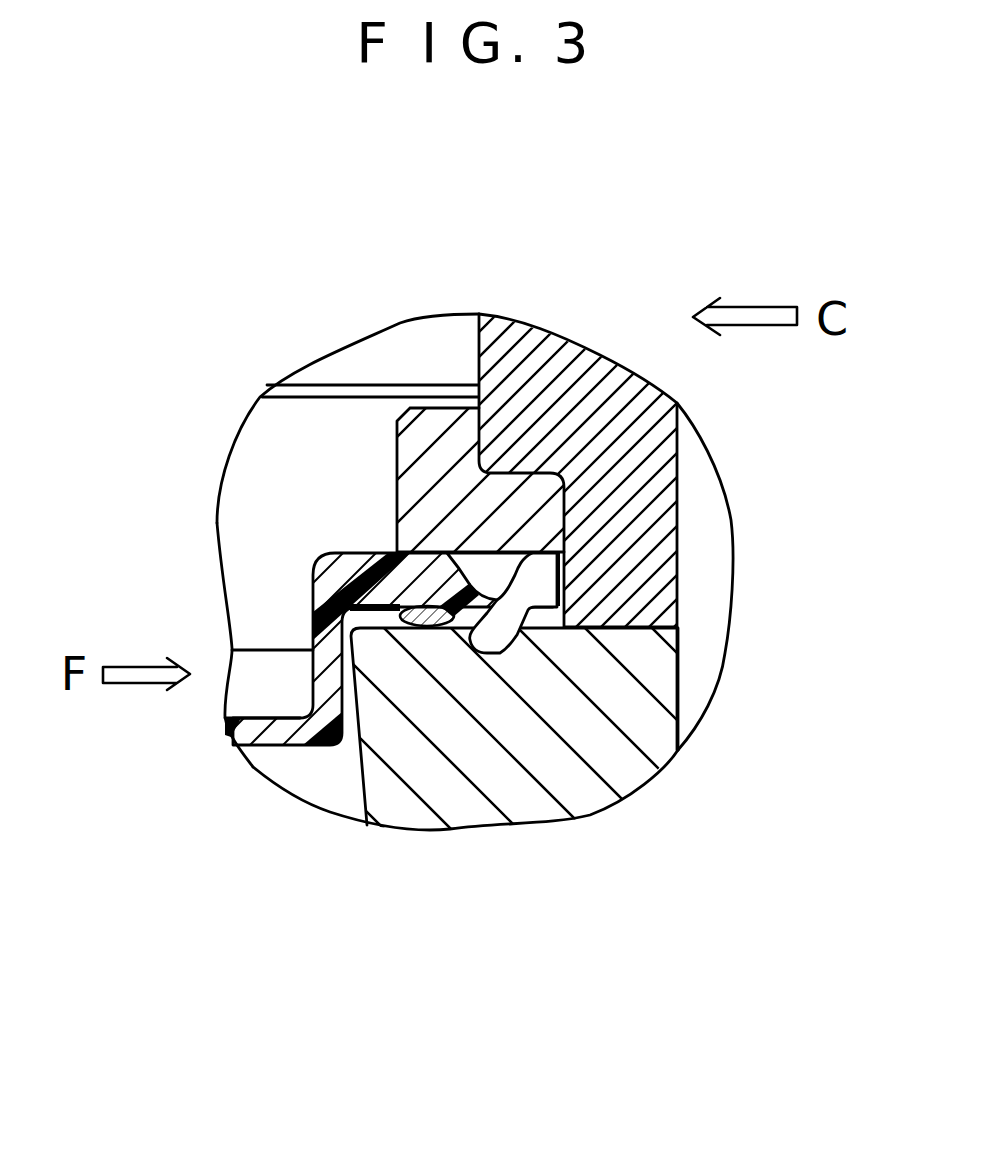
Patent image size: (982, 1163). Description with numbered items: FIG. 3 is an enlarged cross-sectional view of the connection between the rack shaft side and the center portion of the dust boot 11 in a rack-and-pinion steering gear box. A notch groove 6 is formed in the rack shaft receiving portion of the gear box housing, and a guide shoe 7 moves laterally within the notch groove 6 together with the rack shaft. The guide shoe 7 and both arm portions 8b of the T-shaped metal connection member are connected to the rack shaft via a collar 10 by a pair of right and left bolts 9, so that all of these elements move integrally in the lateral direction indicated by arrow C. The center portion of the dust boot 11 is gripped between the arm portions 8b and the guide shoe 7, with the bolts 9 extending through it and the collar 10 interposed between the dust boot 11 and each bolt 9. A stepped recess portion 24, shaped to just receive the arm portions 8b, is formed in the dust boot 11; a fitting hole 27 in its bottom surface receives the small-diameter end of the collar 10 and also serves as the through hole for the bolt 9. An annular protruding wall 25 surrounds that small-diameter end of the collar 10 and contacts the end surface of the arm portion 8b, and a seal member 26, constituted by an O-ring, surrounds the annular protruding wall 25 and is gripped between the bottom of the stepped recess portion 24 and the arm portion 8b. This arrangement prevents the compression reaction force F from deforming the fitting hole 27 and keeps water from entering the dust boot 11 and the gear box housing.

The notch groove 6 is at (394, 347).
The guide shoe 7 is at (410, 498).
The arm portion 8b is at (583, 787).
The bolt 9 is at (705, 540).
The collar 10 is at (578, 357).
The dust boot 11 is at (253, 765).
The stepped recess portion 24 is at (352, 673).
The annular protruding wall 25 is at (497, 637).
The seal member 26 is at (430, 627).
The fitting hole 27 is at (563, 582).